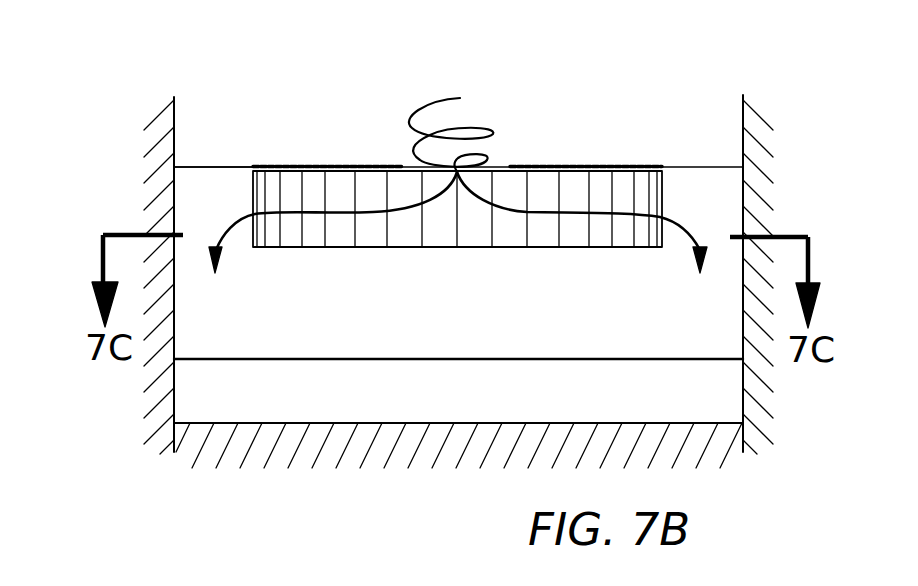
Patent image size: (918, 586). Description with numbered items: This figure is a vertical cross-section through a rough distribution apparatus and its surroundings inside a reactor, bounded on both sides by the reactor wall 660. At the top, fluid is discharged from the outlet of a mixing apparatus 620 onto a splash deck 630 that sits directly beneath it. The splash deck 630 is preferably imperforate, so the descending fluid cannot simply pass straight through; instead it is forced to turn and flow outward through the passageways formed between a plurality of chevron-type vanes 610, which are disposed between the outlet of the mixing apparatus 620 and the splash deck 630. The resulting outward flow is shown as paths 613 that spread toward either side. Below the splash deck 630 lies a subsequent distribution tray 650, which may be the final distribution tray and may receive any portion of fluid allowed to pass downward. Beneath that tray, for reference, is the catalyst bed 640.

The chevron-type vanes 610 is at (355, 183).
The paths 613 is at (237, 225).
The mixing apparatus 620 is at (460, 98).
The splash deck 630 is at (373, 247).
The catalyst bed 640 is at (318, 455).
The subsequent distribution tray 650 is at (490, 360).
The reactor wall 660 is at (172, 186).